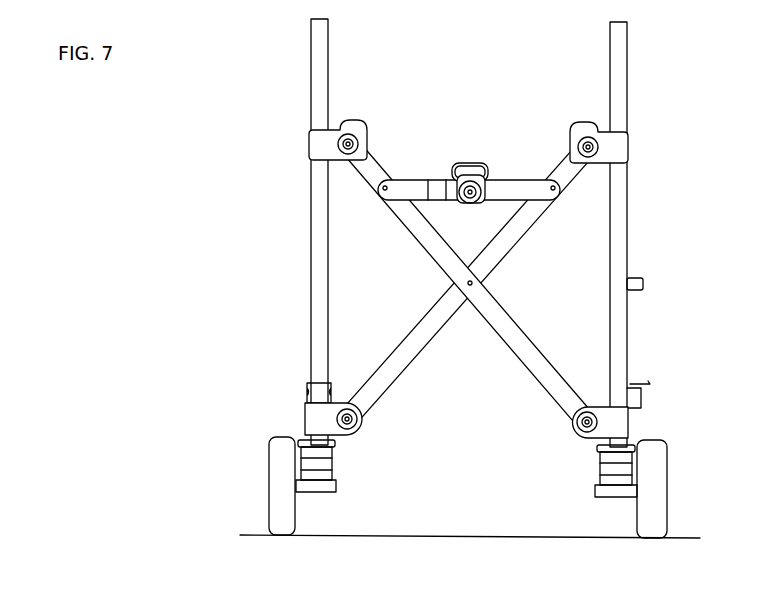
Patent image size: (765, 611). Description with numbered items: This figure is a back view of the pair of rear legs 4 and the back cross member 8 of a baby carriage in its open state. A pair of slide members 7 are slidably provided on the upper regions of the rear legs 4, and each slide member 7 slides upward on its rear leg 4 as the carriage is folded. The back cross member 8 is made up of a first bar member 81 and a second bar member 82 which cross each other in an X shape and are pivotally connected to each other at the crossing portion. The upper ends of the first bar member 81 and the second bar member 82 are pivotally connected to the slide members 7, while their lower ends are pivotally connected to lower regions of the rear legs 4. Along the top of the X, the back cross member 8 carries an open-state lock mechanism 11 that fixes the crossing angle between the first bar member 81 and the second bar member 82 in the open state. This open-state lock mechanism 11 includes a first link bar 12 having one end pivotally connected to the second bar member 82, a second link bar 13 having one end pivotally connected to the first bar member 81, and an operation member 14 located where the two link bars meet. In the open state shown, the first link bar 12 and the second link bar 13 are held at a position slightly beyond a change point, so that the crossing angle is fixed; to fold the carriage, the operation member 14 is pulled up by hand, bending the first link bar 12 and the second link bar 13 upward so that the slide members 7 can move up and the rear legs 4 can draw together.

The rear leg 4 is at (318, 234).
The slide member 7 is at (315, 146).
The back cross member 8 is at (467, 283).
The first bar member 81 is at (420, 333).
The second bar member 82 is at (517, 334).
The open-state lock mechanism 11 is at (469, 141).
The first link bar 12 is at (413, 185).
The second link bar 13 is at (516, 188).
The operation member 14 is at (470, 165).